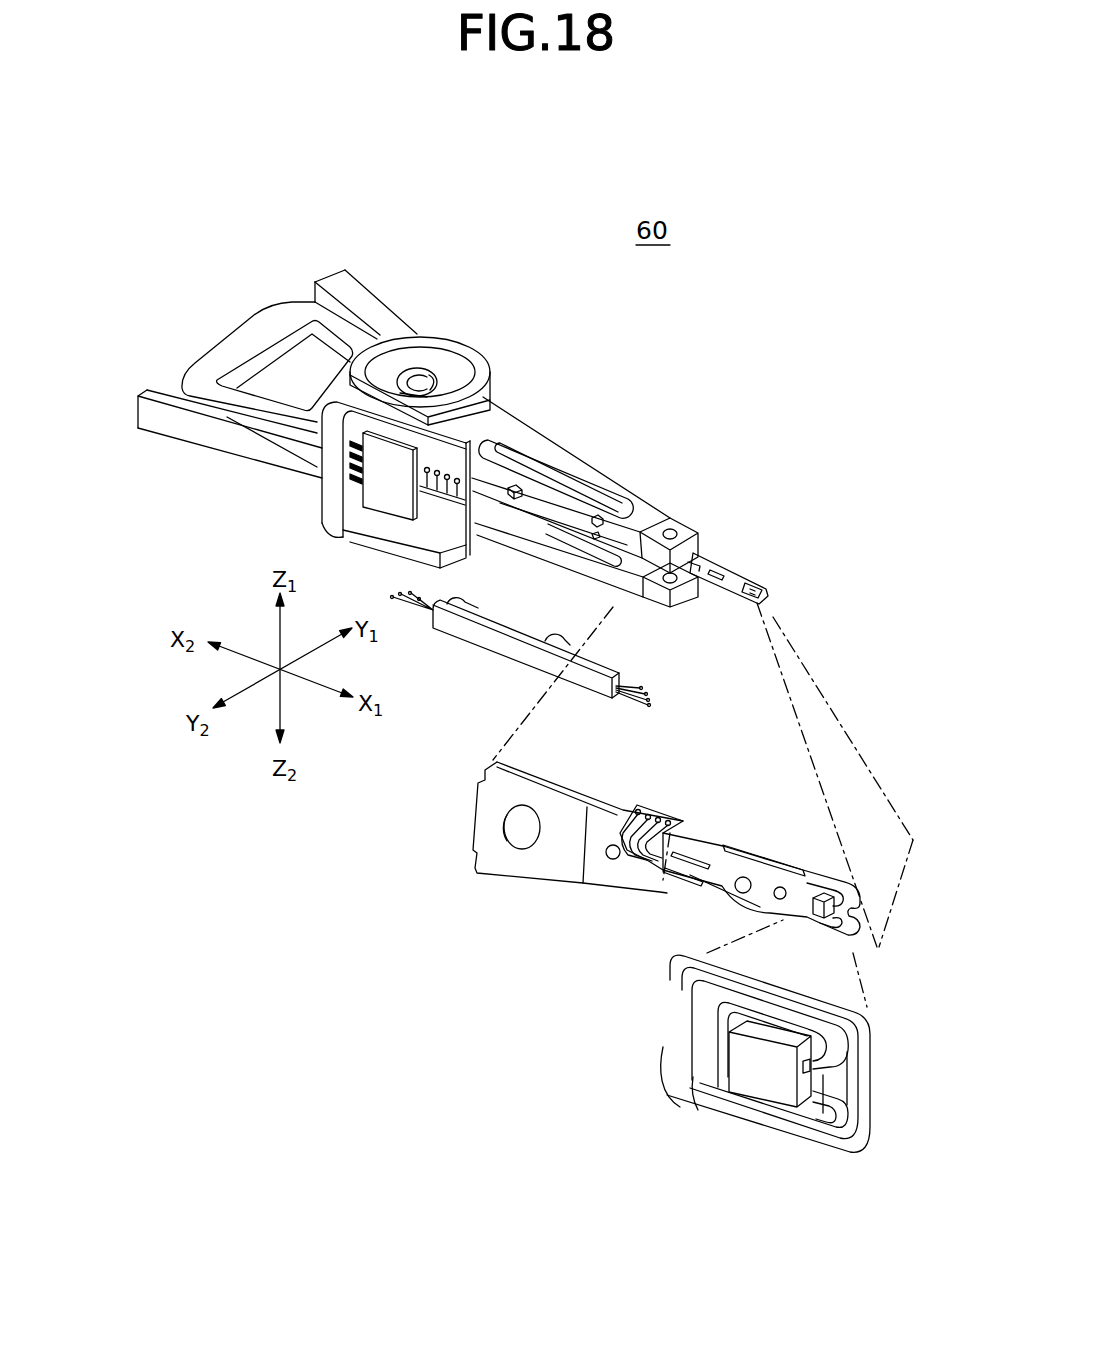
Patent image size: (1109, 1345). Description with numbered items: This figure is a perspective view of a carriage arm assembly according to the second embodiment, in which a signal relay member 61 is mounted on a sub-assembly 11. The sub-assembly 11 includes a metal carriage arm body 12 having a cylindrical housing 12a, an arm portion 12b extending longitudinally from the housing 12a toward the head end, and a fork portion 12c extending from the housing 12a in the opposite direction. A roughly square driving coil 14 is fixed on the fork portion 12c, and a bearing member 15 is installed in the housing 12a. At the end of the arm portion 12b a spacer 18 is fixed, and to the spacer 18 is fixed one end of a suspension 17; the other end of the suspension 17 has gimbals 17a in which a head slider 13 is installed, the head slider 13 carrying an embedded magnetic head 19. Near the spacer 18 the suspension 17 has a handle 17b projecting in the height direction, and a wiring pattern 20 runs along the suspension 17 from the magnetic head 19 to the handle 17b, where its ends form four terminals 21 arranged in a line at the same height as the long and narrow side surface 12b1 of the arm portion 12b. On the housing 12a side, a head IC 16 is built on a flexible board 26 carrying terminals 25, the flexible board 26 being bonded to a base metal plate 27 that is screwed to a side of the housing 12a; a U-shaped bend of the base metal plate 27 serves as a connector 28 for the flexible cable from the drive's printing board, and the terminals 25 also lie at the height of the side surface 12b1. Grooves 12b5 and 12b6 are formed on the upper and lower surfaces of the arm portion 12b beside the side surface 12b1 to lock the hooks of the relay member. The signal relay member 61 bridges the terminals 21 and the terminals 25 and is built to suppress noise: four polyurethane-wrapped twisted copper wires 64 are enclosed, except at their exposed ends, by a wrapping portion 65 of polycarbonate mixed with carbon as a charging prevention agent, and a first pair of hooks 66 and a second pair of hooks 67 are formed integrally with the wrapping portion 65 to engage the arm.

The sub-assembly 11 is at (540, 391).
The carriage arm body 12 is at (548, 437).
The cylindrical housing 12a is at (480, 352).
The arm portion 12b is at (603, 480).
The long and narrow side surface 12b1 is at (573, 523).
The groove 12b5 is at (598, 519).
The groove 12b6 is at (516, 491).
The fork portion 12c is at (183, 430).
The head slider 13 is at (767, 590).
The driving coil 14 is at (238, 335).
The bearing member 15 is at (420, 378).
The head IC 16 is at (383, 500).
The suspension 17 is at (737, 583).
The gimbals 17a is at (780, 1066).
The handle 17b is at (665, 808).
The spacer 18 is at (697, 557).
The magnetic head 19 is at (828, 1050).
The wiring pattern 20 is at (727, 892).
The terminals 21 is at (640, 809).
The terminals 25 is at (444, 478).
The flexible board 26 is at (448, 542).
The base metal plate 27 is at (477, 537).
The connector 28 is at (333, 488).
The signal relay member 61 is at (534, 627).
The polyurethane-wrapped twisted copper wires 64 is at (623, 688).
The wrapping portion 65 is at (525, 658).
The first pair of hooks 66 is at (560, 641).
The second pair of hooks 67 is at (550, 538).